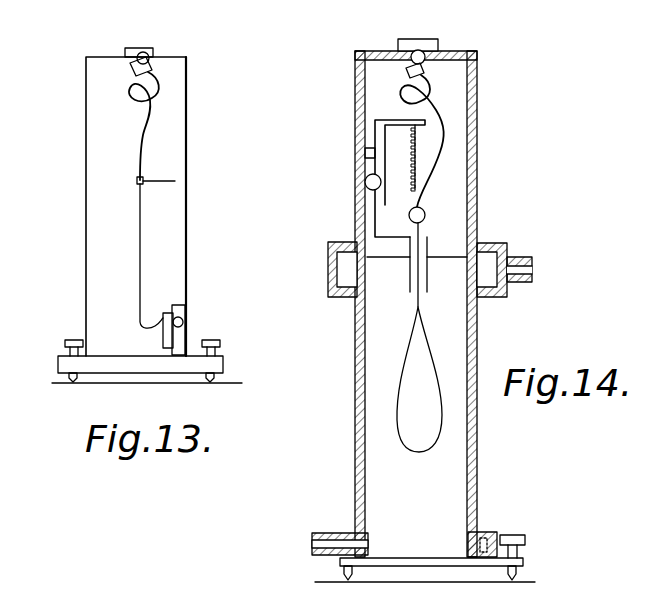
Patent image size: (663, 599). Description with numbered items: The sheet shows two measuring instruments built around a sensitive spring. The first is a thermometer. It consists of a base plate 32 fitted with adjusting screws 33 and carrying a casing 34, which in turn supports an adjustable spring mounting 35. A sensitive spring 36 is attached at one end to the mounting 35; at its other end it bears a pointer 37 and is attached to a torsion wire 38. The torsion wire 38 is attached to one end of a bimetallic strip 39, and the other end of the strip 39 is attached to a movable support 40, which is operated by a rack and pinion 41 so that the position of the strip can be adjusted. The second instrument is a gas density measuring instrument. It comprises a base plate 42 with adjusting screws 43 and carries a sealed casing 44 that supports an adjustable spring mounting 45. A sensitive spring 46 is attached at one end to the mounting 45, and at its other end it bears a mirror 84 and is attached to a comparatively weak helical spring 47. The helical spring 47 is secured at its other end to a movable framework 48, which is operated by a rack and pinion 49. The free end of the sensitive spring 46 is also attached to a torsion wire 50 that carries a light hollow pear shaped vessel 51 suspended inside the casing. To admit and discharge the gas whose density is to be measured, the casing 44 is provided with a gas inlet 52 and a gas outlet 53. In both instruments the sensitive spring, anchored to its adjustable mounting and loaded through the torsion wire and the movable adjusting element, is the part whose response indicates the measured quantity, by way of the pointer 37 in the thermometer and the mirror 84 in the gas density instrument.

In FIG. 13, the base plate 32 is at (215, 365).
In FIG. 13, the adjusting screws 33 is at (65, 343).
In FIG. 13, the casing 34 is at (188, 281).
In FIG. 13, the adjustable spring mounting 35 is at (146, 45).
In FIG. 13, the sensitive spring 36 is at (152, 118).
In FIG. 13, the pointer 37 is at (160, 177).
In FIG. 13, the torsion wire 38 is at (145, 243).
In FIG. 13, the bimetallic strip 39 is at (148, 325).
In FIG. 13, the movable support 40 is at (187, 308).
In FIG. 13, the rack and pinion 41 is at (183, 332).
In FIG. 14, the base plate 42 is at (524, 562).
In FIG. 14, the adjusting screws 43 is at (343, 573).
In FIG. 14, the sealed casing 44 is at (478, 352).
In FIG. 14, the adjustable spring mounting 45 is at (432, 40).
In FIG. 14, the sensitive spring 46 is at (443, 123).
In FIG. 14, the helical spring 47 is at (420, 157).
In FIG. 14, the movable framework 48 is at (375, 157).
In FIG. 14, the rack and pinion 49 is at (366, 185).
In FIG. 14, the torsion wire 50 is at (422, 233).
In FIG. 14, the hollow pear shaped vessel 51 is at (420, 343).
In FIG. 14, the gas inlet 52 is at (313, 543).
In FIG. 14, the gas outlet 53 is at (527, 267).
In FIG. 14, the mirror 84 is at (426, 211).